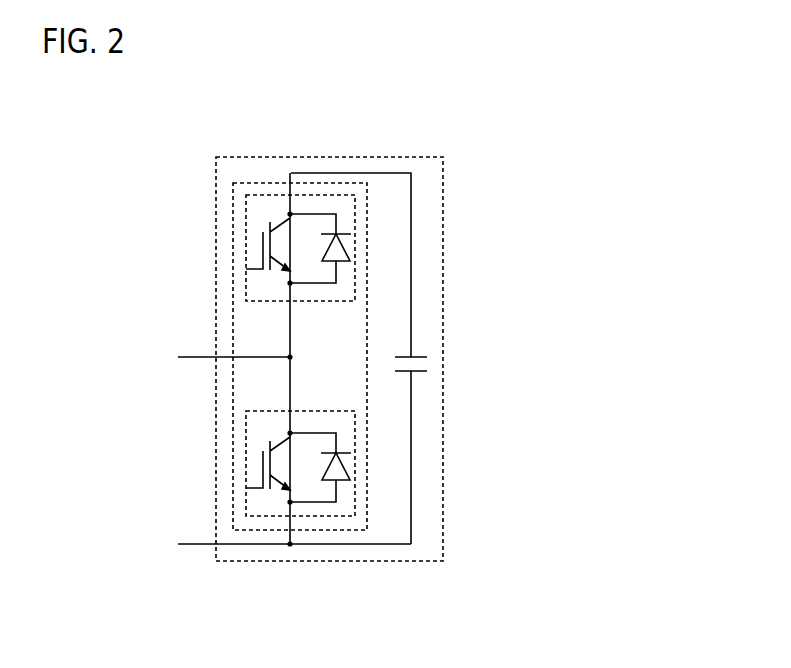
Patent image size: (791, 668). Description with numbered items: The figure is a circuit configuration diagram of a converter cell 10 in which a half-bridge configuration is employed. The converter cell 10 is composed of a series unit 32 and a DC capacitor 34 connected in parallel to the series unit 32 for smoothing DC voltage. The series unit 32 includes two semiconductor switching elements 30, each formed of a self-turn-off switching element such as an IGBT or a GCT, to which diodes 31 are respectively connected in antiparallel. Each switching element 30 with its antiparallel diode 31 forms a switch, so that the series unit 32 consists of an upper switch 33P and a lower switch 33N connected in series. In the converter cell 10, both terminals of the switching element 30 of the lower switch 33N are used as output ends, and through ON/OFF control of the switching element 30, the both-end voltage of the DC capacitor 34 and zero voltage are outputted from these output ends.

The converter cell 10 is at (443, 170).
The semiconductor switching element 30 is at (263, 222).
The diode 31 is at (341, 233).
The series unit 32 is at (241, 185).
The switch 33P is at (247, 300).
The switch 33N is at (248, 420).
The DC capacitor 34 is at (418, 348).